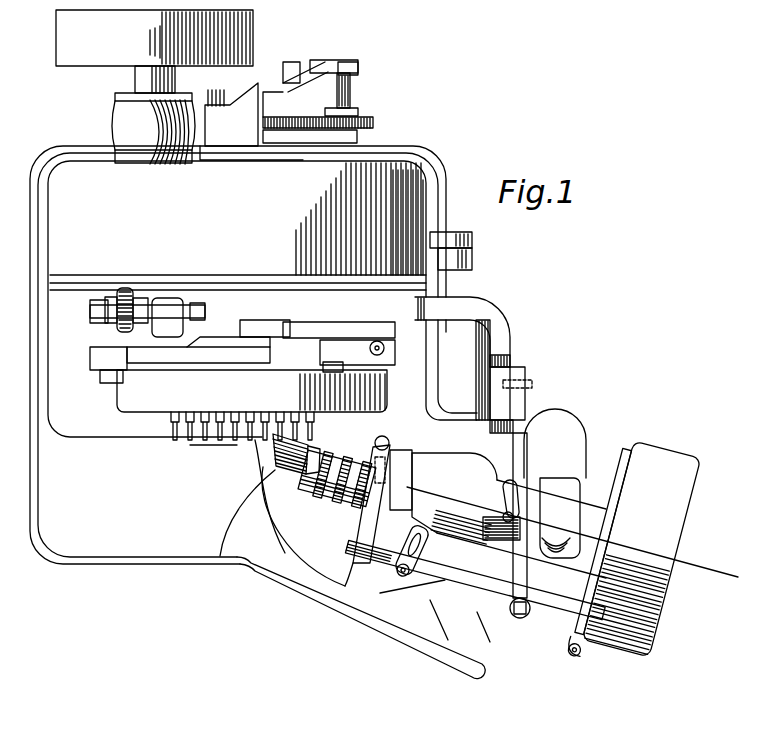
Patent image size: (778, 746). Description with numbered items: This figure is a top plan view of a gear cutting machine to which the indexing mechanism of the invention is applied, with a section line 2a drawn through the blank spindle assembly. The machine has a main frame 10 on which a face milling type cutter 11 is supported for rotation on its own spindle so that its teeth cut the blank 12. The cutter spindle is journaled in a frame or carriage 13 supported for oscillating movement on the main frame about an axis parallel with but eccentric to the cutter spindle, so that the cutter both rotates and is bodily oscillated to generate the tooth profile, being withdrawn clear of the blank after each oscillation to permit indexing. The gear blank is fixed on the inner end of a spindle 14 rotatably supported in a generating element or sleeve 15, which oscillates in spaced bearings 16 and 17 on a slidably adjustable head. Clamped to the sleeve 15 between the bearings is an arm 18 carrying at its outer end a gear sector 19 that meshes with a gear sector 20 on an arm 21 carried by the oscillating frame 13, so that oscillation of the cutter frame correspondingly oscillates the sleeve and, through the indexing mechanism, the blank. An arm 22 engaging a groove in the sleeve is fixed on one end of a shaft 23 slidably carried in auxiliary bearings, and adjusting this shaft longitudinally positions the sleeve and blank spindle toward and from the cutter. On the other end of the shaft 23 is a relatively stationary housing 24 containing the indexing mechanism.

The main frame 10 is at (112, 540).
The cutter 11 is at (172, 423).
The blank 12 is at (262, 493).
The frame or carriage 13 is at (418, 292).
The spindle 14 is at (353, 490).
The generating element or sleeve 15 is at (397, 460).
The bearing 16 is at (560, 502).
The bearing 17 is at (545, 453).
The arm 18 is at (530, 443).
The gear sector 19 is at (470, 462).
The gear sector 20 is at (500, 423).
The arm 21 is at (497, 328).
The arm 22 is at (360, 505).
The shaft 23 is at (405, 572).
The housing 24 is at (662, 457).
The section line 2a is at (203, 453).